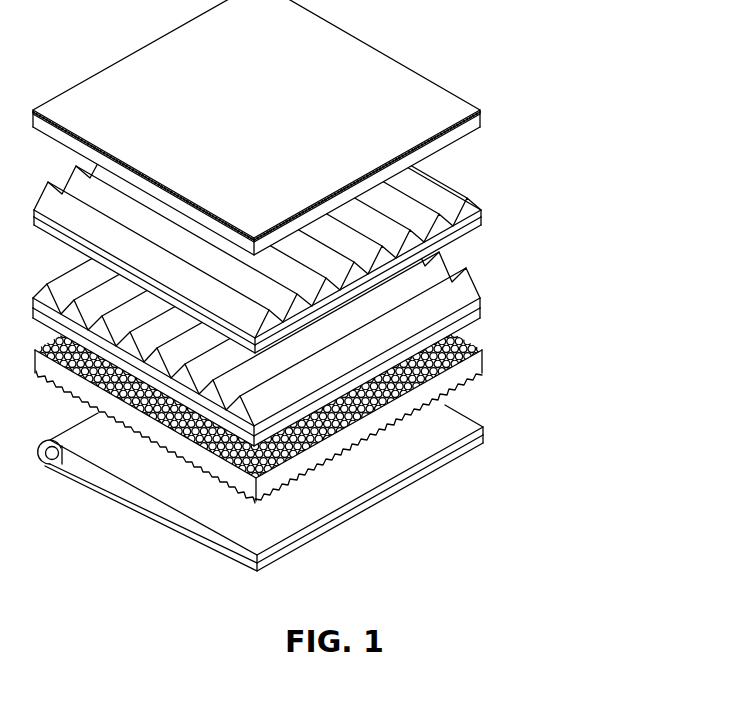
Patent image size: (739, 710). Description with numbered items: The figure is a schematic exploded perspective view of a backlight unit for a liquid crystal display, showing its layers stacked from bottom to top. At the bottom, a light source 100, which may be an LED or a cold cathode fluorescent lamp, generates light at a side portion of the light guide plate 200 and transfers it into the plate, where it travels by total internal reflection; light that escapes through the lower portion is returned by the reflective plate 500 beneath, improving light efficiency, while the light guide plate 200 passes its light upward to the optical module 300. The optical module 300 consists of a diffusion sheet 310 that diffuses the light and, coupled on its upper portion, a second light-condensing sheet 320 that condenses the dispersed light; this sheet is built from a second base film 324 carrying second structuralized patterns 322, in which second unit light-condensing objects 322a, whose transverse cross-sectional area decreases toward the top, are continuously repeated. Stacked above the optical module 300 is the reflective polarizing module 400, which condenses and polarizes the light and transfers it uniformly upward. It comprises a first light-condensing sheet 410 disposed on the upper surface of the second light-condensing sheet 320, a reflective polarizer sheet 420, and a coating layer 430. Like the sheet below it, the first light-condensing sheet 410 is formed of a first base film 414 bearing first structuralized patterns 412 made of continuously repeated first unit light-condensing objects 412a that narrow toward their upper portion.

The light source 100 is at (50, 462).
The light guide plate 200 is at (133, 492).
The optical module 300 is at (339, 330).
The diffusion sheet 310 is at (483, 362).
The second light-condensing sheet 320 is at (318, 301).
The second structuralized patterns 322 is at (299, 296).
The second unit light-condensing objects 322a is at (457, 288).
The second base film 324 is at (470, 317).
The reflective polarizing module 400 is at (339, 176).
The first light-condensing sheet 410 is at (318, 211).
The first structuralized patterns 412 is at (300, 207).
The first unit light-condensing objects 412a is at (445, 188).
The first base film 414 is at (470, 221).
The reflective polarizer sheet 420 is at (467, 127).
The coating layer 430 is at (452, 110).
The reflective plate 500 is at (200, 537).